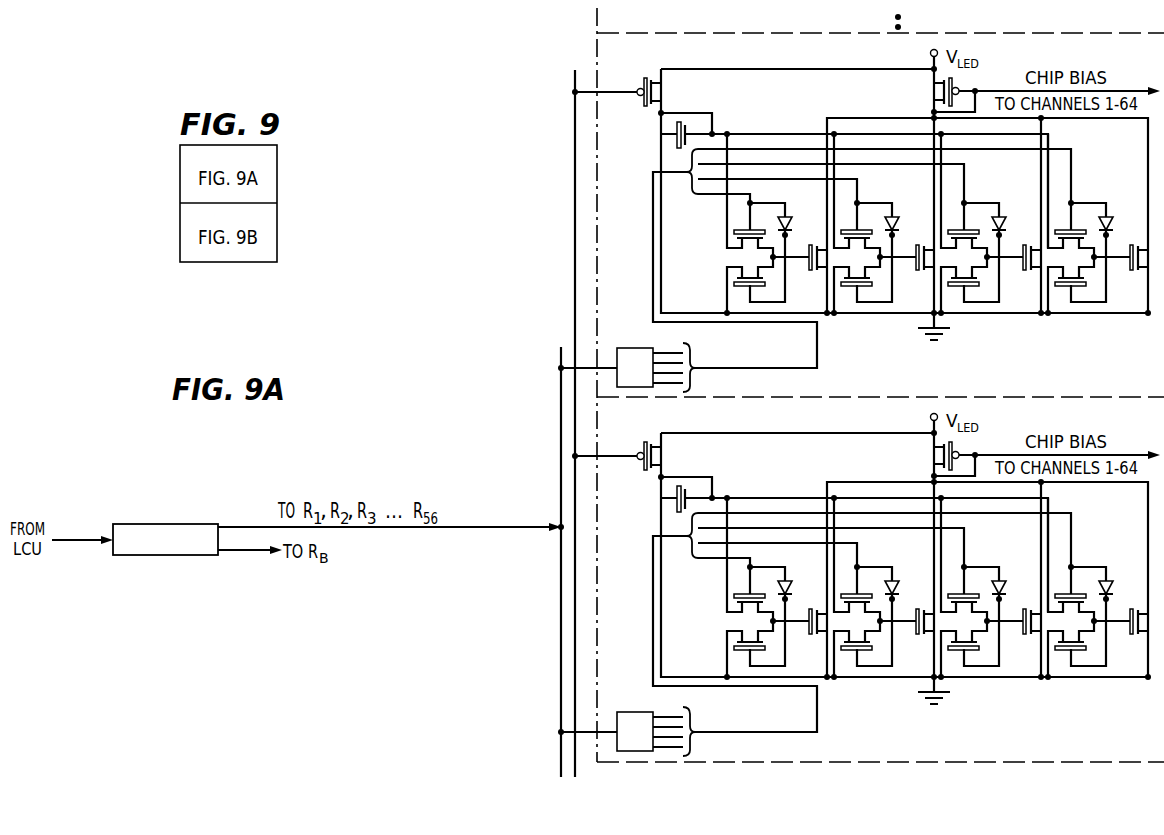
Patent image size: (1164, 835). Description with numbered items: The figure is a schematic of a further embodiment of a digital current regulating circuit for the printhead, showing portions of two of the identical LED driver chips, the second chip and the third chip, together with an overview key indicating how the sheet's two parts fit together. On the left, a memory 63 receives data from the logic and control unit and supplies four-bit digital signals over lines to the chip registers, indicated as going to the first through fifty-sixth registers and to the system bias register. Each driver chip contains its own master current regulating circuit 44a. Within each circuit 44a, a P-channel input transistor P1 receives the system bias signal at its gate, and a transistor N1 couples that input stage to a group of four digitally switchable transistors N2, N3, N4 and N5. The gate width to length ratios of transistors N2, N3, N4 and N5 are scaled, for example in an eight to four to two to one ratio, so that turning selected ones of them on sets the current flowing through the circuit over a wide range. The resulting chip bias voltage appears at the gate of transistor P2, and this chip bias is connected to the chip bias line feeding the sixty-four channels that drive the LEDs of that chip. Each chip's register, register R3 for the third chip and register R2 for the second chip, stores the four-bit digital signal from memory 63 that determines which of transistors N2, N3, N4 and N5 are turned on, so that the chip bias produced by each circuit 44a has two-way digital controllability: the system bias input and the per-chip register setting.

The memory 63 is at (147, 524).
The master current regulating circuit 44a is at (718, 58).
The gate input transistor P1 is at (668, 274).
The transistor N1 is at (655, 317).
The bias transistor P2 is at (927, 274).
The digitally switchable transistor N2 is at (777, 407).
The digitally switchable transistor N3 is at (884, 407).
The digitally switchable transistor N4 is at (991, 407).
The digitally switchable transistor N5 is at (1098, 407).
The 4-bit register R3 is at (635, 367).
The 4-bit register R2 is at (635, 731).